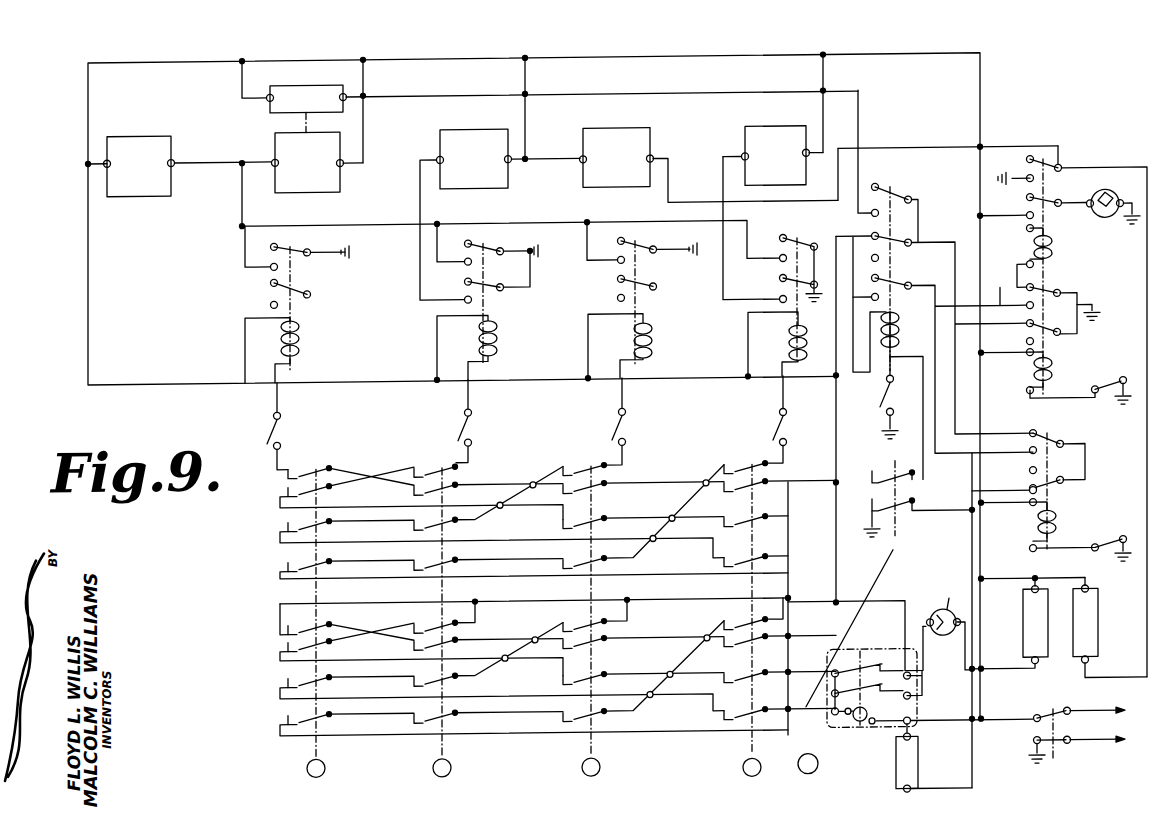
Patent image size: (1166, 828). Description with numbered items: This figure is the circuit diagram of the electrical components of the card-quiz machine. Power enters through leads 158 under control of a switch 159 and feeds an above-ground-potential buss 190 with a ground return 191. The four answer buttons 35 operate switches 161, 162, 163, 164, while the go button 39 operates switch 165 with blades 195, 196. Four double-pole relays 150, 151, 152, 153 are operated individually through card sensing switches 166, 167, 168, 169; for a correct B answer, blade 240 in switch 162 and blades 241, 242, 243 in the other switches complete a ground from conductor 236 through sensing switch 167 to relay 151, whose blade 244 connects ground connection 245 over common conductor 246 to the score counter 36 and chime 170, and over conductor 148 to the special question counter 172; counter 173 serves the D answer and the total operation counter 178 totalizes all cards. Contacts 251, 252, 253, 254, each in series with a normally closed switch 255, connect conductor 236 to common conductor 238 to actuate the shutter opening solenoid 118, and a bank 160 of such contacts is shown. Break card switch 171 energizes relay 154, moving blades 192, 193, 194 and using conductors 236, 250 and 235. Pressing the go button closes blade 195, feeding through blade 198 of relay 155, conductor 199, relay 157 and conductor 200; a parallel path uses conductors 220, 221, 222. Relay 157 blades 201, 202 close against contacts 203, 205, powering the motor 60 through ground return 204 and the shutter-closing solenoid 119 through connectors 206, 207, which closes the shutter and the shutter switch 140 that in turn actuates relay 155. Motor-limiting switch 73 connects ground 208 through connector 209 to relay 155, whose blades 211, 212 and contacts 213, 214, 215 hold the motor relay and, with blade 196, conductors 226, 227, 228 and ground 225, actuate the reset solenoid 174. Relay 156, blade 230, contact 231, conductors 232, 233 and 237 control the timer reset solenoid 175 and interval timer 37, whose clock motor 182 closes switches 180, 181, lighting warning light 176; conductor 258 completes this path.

The above-ground-potential buss 190 is at (598, 63).
The reset solenoid 174 is at (325, 88).
The chime 170 is at (138, 197).
The score counter 36 is at (273, 152).
The special question counter 172 is at (500, 195).
The conductor 148 is at (420, 274).
The total operation counter 178 is at (607, 191).
The contact 252 is at (550, 162).
The special question counter 173 is at (745, 139).
The common conductor 246 is at (246, 214).
The relay 150 is at (303, 326).
The blade 244 is at (480, 254).
The ground connection 245 is at (531, 272).
The switch blade 241 is at (492, 299).
The relay 151 is at (499, 341).
The relay 152 is at (653, 339).
The relay 153 is at (807, 350).
The sensing switch 166 is at (282, 433).
The sensing switch 167 is at (468, 433).
The sensing switch 168 is at (626, 434).
The sensing switch 169 is at (790, 450).
The switch blade 240 is at (449, 468).
The switch blade 242 is at (605, 519).
The switch blade 243 is at (742, 517).
The normally closed switch 255 is at (348, 646).
The common conductor 238 is at (676, 606).
The contact / conductor 251 is at (318, 628).
The contact 253 is at (616, 630).
The contact 254 is at (788, 628).
The switch bank 160 is at (278, 632).
The answer button 35 is at (293, 770).
The switch 161 is at (323, 730).
The switch 162 is at (447, 732).
The switch 163 is at (601, 735).
The switch 164 is at (760, 735).
The conductor 228 is at (860, 131).
The contact blade 194 is at (897, 202).
The contact blade 193 is at (905, 237).
The contact blade 192 is at (897, 287).
The conductor 250 is at (860, 252).
The conductor 236 is at (853, 296).
The relay 154 is at (900, 349).
The break card sense switch 171 is at (887, 404).
The conductor 235 is at (880, 402).
The ground return 191 is at (883, 433).
The blade 196 is at (900, 494).
The blade 195 is at (912, 520).
The conductor 227 is at (888, 470).
The conductor 226 is at (942, 463).
The switch 165 is at (913, 527).
The conductor 220 is at (863, 560).
The conductor 221 is at (958, 308).
The fixed contact 205 is at (1013, 185).
The switch blade 202 is at (1060, 174).
The motor 60 is at (1103, 201).
The ground return 204 is at (1133, 236).
The conductor 200 is at (1027, 219).
The switch blade 201 is at (1050, 210).
The fixed contact 203 is at (1048, 229).
The relay 157 is at (1052, 259).
The conductor 222 is at (1007, 275).
The fixed contact 213 is at (1050, 279).
The contact blade 212 is at (1066, 301).
The fixed contact 214 is at (1053, 298).
The contact 215 is at (1053, 320).
The contact blade 211 is at (1062, 347).
The ground connection 225 is at (1094, 318).
The relay 156 is at (1053, 382).
The connector 209 is at (1062, 406).
The motor-limiting switch 73 is at (1112, 406).
The grounded return 208 is at (1127, 394).
The conductor 233 is at (1072, 433).
The upper blade 230 is at (1075, 462).
The fixed contact 231 is at (1028, 451).
The switch blade 198 is at (1054, 469).
The conductor 199 is at (1087, 476).
The relay 155 is at (1056, 534).
The shutter switch 140 is at (1106, 556).
The connector 207 is at (1037, 590).
The shutter opening solenoid 118 is at (1022, 634).
The shutter-closing solenoid 119 is at (1099, 644).
The connector 206 is at (1145, 616).
The conductor 237 is at (1016, 681).
The conductor 232 is at (980, 574).
The conductor 258 is at (890, 610).
The warning light 176 is at (943, 645).
The switch 181 is at (868, 672).
The switch 180 is at (847, 679).
The electrical clock motor 182 is at (872, 724).
The interval timer 37 is at (855, 735).
The go button 39 is at (819, 778).
The timer reset solenoid 175 is at (919, 760).
The leads 158 is at (1085, 726).
The switch 159 is at (1059, 773).